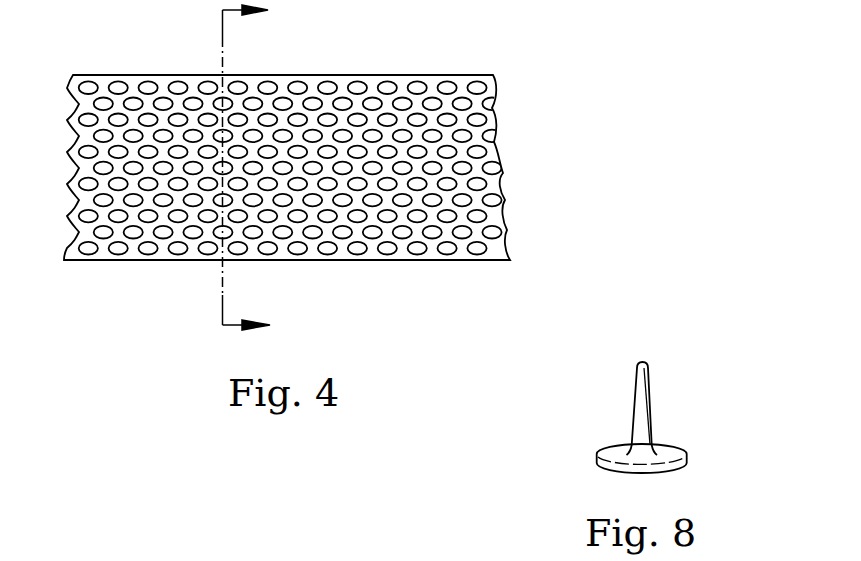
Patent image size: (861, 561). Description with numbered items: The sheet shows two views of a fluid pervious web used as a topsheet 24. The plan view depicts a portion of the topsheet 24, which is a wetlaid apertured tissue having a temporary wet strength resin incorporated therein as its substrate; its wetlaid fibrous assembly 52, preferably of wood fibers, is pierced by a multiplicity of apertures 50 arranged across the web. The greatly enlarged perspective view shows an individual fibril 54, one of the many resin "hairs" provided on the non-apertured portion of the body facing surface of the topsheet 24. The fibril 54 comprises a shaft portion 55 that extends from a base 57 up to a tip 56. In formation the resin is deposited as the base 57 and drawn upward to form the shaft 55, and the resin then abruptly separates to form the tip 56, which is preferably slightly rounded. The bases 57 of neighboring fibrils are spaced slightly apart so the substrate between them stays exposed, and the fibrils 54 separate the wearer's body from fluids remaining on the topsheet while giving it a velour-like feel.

In FIG. 4, the topsheet 24 is at (326, 170).
In FIG. 4, the apertures 50 is at (500, 214).
In FIG. 4, the wetlaid fibrous assembly 52 is at (493, 183).
In FIG. 8, the fibril 54 is at (658, 402).
In FIG. 8, the shaft portion 55 is at (640, 406).
In FIG. 8, the tip 56 is at (641, 361).
In FIG. 8, the base 57 is at (612, 455).